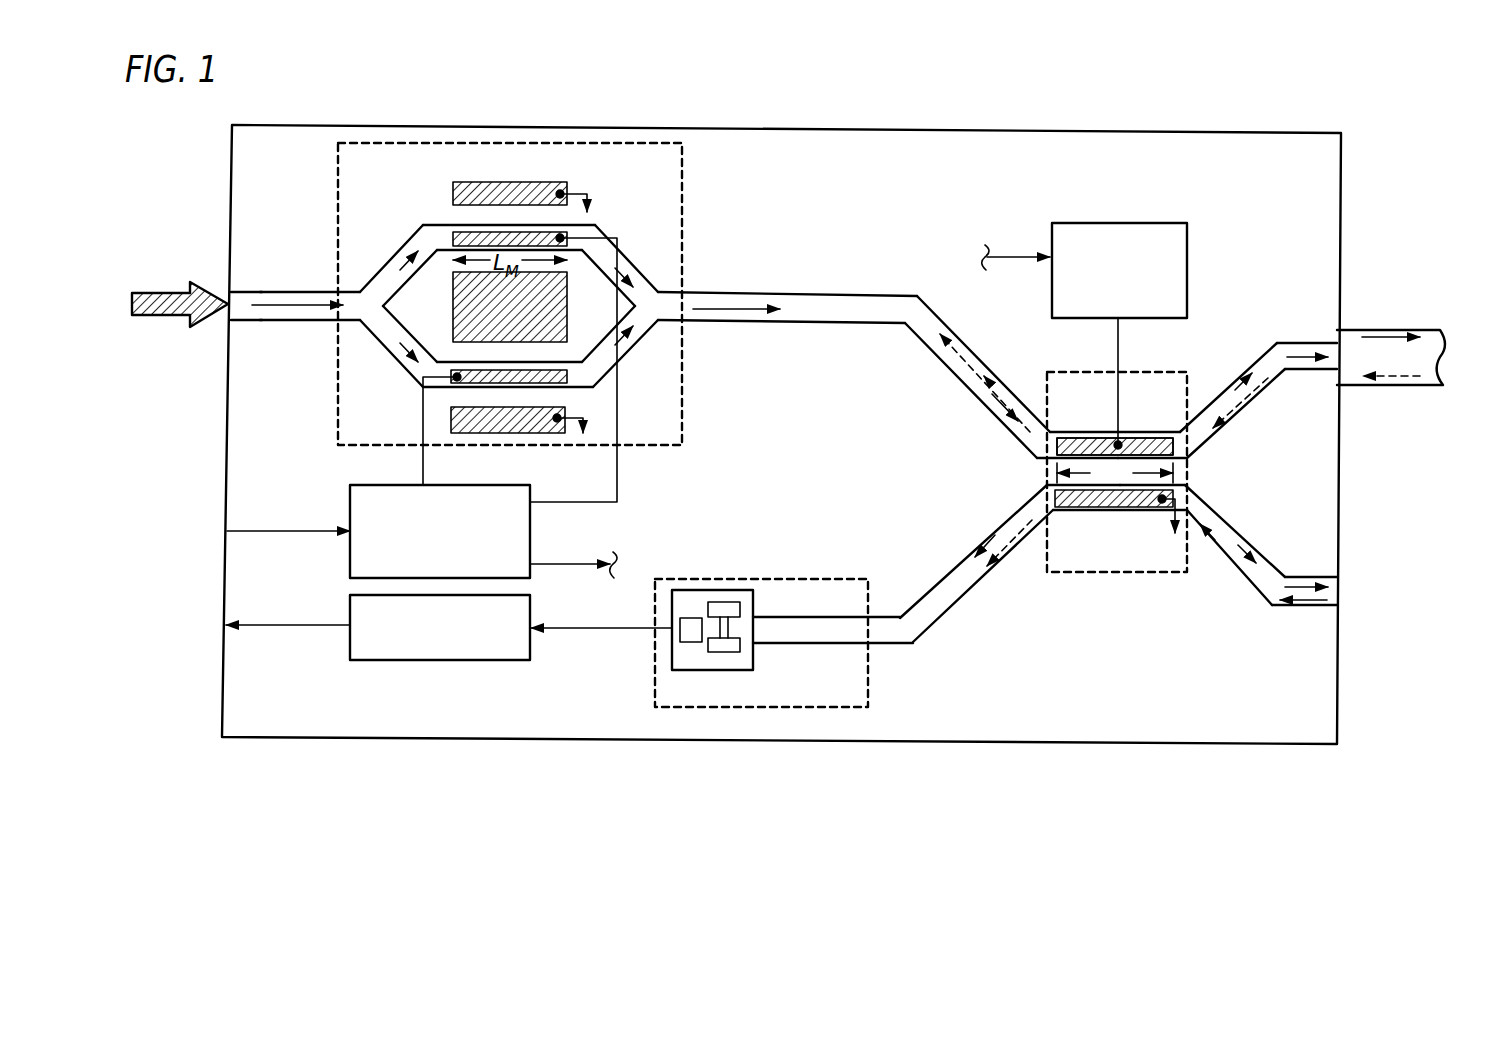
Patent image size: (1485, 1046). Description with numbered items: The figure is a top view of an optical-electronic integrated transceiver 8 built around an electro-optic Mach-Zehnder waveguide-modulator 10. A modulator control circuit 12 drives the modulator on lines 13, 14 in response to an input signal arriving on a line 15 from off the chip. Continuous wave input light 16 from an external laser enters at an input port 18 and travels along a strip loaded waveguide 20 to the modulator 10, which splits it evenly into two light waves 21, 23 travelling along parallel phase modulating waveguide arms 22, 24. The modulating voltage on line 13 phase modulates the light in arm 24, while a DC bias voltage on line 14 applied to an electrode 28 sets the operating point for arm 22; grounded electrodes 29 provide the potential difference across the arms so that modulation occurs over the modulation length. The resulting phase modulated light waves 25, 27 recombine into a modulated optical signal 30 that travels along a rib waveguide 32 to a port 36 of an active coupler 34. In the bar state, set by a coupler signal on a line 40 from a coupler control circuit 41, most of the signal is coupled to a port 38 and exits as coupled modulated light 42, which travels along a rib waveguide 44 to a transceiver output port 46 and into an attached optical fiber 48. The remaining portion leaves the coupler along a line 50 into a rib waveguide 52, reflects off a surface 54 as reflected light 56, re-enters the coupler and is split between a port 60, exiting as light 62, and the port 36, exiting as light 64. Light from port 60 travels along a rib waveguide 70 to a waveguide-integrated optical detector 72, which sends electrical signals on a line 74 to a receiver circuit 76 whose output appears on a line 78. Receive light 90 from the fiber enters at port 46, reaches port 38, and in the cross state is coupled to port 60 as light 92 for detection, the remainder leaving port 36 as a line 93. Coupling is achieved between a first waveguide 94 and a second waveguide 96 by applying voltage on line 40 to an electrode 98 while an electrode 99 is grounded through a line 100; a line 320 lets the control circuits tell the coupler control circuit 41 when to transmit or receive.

The transceiver 8 is at (893, 114).
The waveguide-modulator 10 is at (690, 253).
The modulator control circuit 12 is at (531, 536).
The line 13 is at (421, 468).
The line 14 is at (620, 470).
The line 15 is at (268, 530).
The input light 16 is at (152, 316).
The input port 18 is at (226, 316).
The strip loaded waveguide 20 is at (311, 291).
The light wave 21 is at (395, 276).
The phase modulating waveguide arm 22 is at (460, 232).
The light wave 23 is at (392, 340).
The phase modulating waveguide arm 24 is at (458, 376).
The phase modulated light wave 25 is at (632, 285).
The phase modulated light wave 27 is at (625, 334).
The electrode 28 is at (455, 228).
The grounded electrodes 29 is at (453, 189).
The modulated optical signal 30 is at (737, 312).
The rib waveguide 32 is at (730, 296).
The active coupler 34 is at (1100, 584).
The port 36 is at (1045, 446).
The port 38 is at (1190, 452).
The line 40 is at (1120, 352).
The coupler control circuit 41 is at (1120, 223).
The coupled modulated light 42 is at (1227, 398).
The rib waveguide 44 is at (1300, 350).
The transceiver output port 46 is at (1347, 350).
The optical fiber 48 is at (1190, 500).
The line 50 is at (1235, 540).
The rib waveguide 52 is at (1260, 604).
The surface 54 is at (1337, 593).
The reflected light 56 is at (1223, 553).
The port 60 is at (1044, 487).
The light 62 is at (995, 537).
The light 64 is at (1007, 393).
The rib waveguide 70 is at (933, 627).
The waveguide-integrated optical detector 72 is at (738, 576).
The line 74 is at (585, 626).
The receiver circuit 76 is at (522, 609).
The line 78 is at (265, 625).
The receive light 90 is at (1247, 412).
The light 92 is at (1007, 550).
The line 93 is at (958, 347).
The first waveguide 94 is at (1175, 444).
The second waveguide 96 is at (1053, 509).
The electrode 98 is at (1066, 444).
The electrode 99 is at (1100, 508).
The line 100 is at (1115, 473).
The line 320 is at (600, 560).